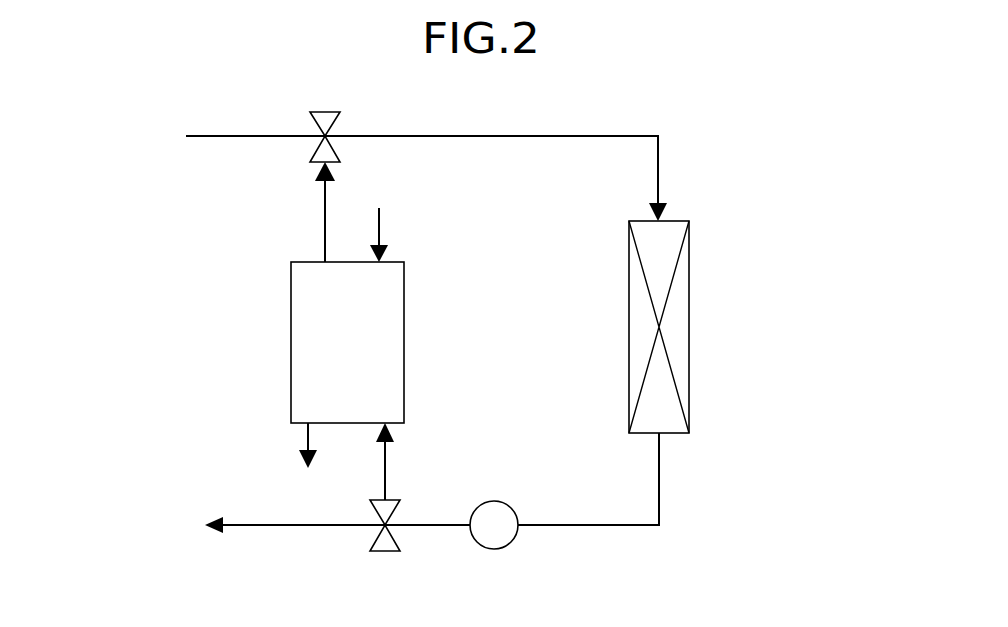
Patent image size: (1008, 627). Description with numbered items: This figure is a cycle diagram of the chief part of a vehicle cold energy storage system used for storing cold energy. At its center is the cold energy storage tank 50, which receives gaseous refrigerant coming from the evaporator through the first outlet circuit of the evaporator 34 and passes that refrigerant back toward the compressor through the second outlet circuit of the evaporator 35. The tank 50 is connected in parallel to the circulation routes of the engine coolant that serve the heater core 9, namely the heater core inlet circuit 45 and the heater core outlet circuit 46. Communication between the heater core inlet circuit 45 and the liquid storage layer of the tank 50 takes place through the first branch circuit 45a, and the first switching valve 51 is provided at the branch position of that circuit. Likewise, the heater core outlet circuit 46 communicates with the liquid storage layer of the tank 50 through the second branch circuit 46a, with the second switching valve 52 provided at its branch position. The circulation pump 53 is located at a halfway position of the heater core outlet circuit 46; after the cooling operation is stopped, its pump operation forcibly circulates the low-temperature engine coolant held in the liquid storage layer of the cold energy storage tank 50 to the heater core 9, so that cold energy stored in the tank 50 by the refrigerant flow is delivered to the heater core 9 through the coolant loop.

The heater core 9 is at (689, 262).
The first outlet circuit of the evaporator 34 is at (379, 227).
The second outlet circuit of the evaporator 35 is at (300, 437).
The heater core inlet circuit 45 is at (493, 137).
The first branch circuit 45a is at (325, 219).
The heater core outlet circuit 46 is at (628, 525).
The second branch circuit 46a is at (389, 462).
The cold energy storage tank 50 is at (404, 299).
The first switching valve 51 is at (335, 112).
The second switching valve 52 is at (395, 551).
The circulation pump 53 is at (512, 508).